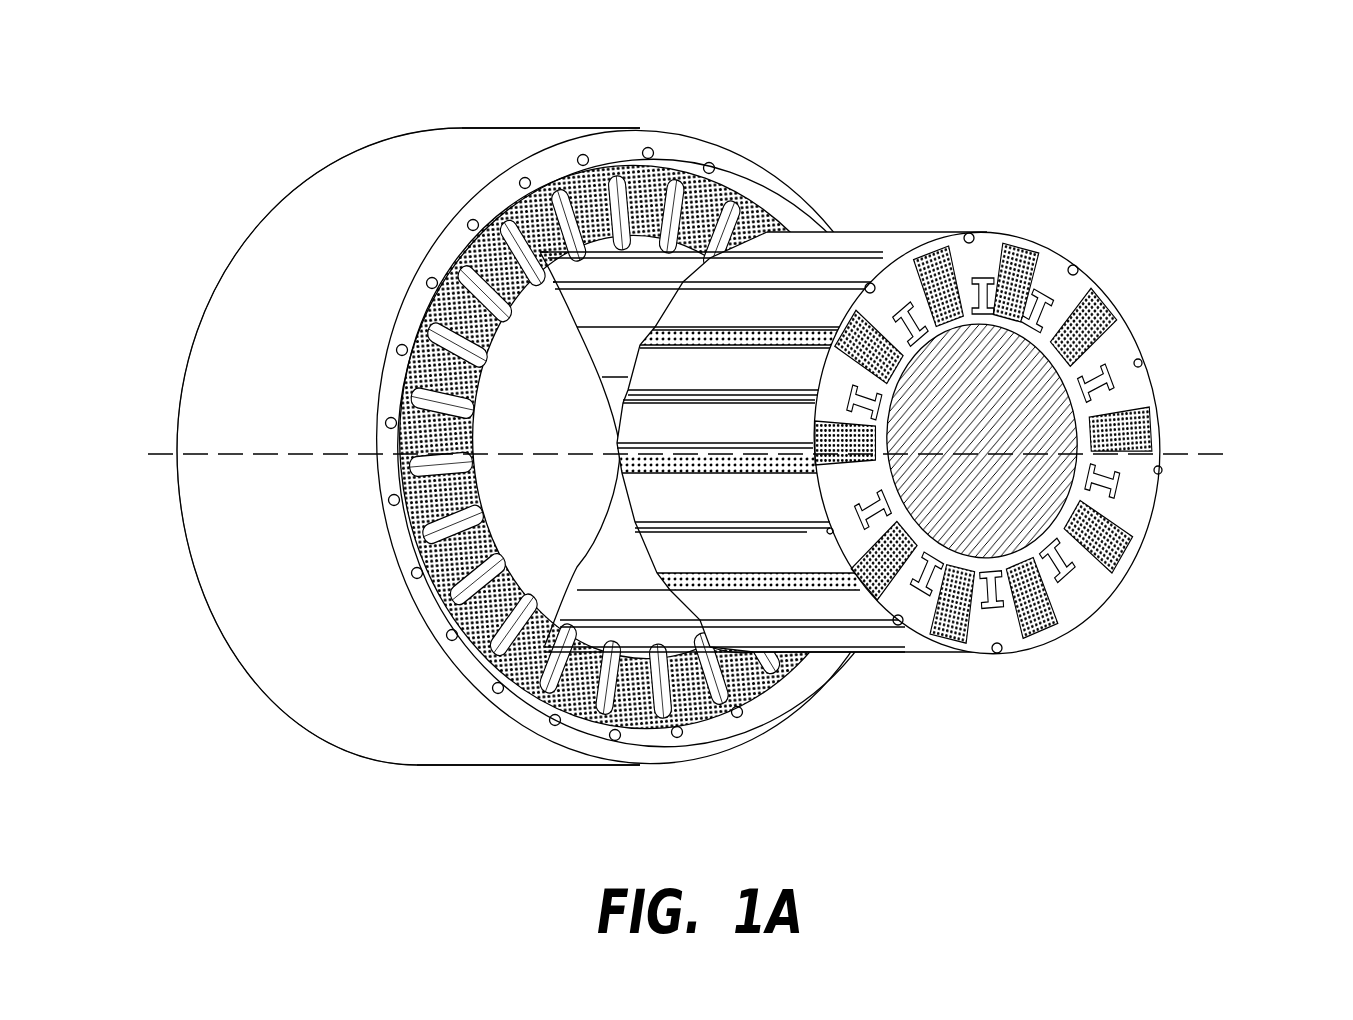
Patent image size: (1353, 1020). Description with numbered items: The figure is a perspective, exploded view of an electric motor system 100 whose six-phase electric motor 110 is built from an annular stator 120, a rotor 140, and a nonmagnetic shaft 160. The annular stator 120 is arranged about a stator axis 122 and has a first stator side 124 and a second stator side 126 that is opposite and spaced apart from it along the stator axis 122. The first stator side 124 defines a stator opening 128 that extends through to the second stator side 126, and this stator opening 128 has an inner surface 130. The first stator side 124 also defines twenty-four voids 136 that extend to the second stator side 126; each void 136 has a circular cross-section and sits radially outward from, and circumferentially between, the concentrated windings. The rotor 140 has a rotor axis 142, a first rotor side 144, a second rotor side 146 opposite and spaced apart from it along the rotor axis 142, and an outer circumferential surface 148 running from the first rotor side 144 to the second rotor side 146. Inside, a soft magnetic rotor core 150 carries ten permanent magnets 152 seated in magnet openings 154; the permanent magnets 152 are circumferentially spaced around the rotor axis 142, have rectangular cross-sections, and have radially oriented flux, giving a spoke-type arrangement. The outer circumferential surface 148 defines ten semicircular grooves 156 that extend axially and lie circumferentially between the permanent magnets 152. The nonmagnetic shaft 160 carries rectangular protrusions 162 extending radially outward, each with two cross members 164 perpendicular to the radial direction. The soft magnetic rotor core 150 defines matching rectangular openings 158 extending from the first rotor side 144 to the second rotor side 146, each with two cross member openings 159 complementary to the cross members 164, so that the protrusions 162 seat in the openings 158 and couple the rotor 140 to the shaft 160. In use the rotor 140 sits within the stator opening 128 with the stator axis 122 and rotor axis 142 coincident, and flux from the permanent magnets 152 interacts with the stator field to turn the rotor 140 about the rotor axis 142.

The electric motor system 100 is at (1056, 75).
The six-phase electric motor 110 is at (851, 185).
The annular stator 120 is at (176, 672).
The stator axis 122 is at (152, 444).
The first stator side 124 is at (690, 148).
The second stator side 126 is at (292, 190).
The stator opening 128 is at (530, 673).
The inner surface 130 is at (602, 700).
The voids 136 is at (646, 148).
The rotor 140 is at (1228, 237).
The rotor axis 142 is at (1163, 444).
The first rotor side 144 is at (1126, 343).
The second rotor side 146 is at (775, 660).
The outer circumferential surface 148 is at (888, 258).
The soft magnetic rotor core 150 is at (1103, 582).
The permanent magnets 152 is at (1040, 652).
The magnet openings 154 is at (1162, 490).
The grooves 156 is at (803, 523).
The rectangular openings 158 is at (1102, 303).
The cross member openings 159 is at (1056, 268).
The nonmagnetic shaft 160 is at (1140, 377).
The rectangular protrusions 162 is at (975, 285).
The cross members 164 is at (1003, 296).